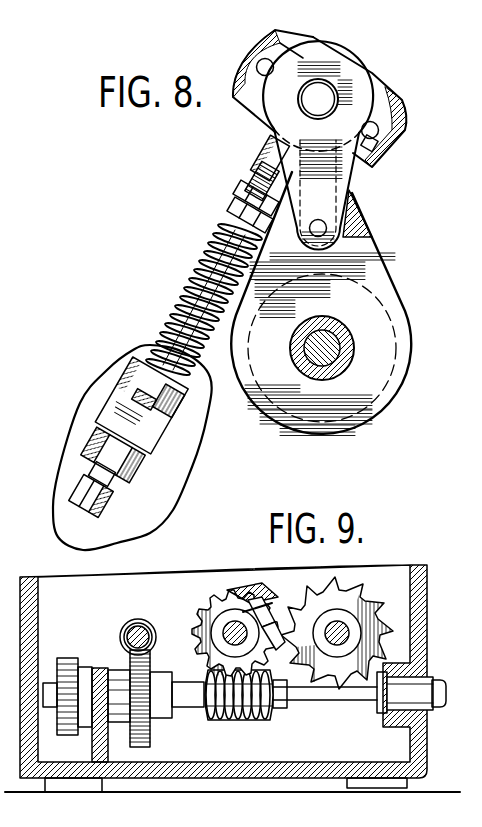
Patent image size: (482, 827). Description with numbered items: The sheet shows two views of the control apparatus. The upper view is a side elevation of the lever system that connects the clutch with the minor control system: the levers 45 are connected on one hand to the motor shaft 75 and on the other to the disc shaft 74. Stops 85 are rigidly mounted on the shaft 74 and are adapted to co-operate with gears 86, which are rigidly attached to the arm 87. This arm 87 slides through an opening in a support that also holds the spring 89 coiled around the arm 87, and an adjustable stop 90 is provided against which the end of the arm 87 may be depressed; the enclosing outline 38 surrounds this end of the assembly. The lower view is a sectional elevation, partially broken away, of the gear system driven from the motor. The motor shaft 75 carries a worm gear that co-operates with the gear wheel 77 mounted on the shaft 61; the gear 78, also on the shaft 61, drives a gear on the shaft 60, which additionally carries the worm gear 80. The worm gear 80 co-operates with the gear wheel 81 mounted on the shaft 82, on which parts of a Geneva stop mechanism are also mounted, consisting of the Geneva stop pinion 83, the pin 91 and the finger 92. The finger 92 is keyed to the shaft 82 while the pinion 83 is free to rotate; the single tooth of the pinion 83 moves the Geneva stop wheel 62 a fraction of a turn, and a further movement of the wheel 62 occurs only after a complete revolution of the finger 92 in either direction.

In FIG. 8, the enclosing outline / detail envelope 38 is at (137, 363).
In FIG. 8, the levers 45 is at (354, 232).
In FIG. 9, the shaft 60 is at (325, 694).
In FIG. 9, the shaft 61 is at (183, 699).
In FIG. 9, the Geneva stop wheel 62 is at (378, 612).
In FIG. 8, the disc shaft 74 is at (318, 99).
In FIG. 8, the motor shaft 75 is at (354, 346).
In FIG. 9, the motor shaft 75 is at (127, 634).
In FIG. 9, the gear wheel 77 is at (142, 743).
In FIG. 9, the gear 78 is at (70, 736).
In FIG. 9, the worm gear 80 is at (243, 715).
In FIG. 9, the gear wheel 81 is at (192, 630).
In FIG. 9, the shaft 82 is at (231, 628).
In FIG. 9, the Geneva stop pinion 83 is at (252, 598).
In FIG. 8, the stops 85 is at (262, 69).
In FIG. 8, the gears 86 is at (272, 82).
In FIG. 8, the arm 87 is at (278, 192).
In FIG. 8, the spring 89 is at (190, 290).
In FIG. 8, the adjustable stop 90 is at (138, 443).
In FIG. 9, the pin 91 is at (275, 622).
In FIG. 9, the finger 92 is at (280, 634).